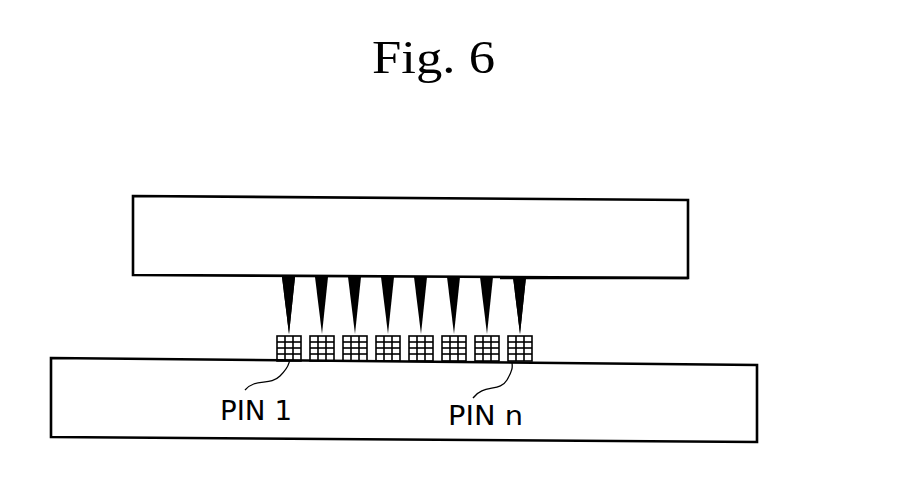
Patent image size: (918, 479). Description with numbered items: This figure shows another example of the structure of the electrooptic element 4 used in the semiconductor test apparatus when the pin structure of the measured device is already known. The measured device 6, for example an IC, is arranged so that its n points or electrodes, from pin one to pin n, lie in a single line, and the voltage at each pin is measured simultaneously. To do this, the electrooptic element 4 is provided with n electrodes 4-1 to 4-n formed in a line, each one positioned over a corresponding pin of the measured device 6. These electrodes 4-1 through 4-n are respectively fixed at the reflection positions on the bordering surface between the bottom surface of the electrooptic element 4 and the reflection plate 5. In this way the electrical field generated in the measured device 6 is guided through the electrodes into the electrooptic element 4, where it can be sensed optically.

The electrooptic element 4 is at (357, 215).
The reflection plate 5 is at (662, 278).
The measured device 6 is at (757, 402).
The electrode 4-1 is at (285, 311).
The electrode 4-n is at (523, 316).